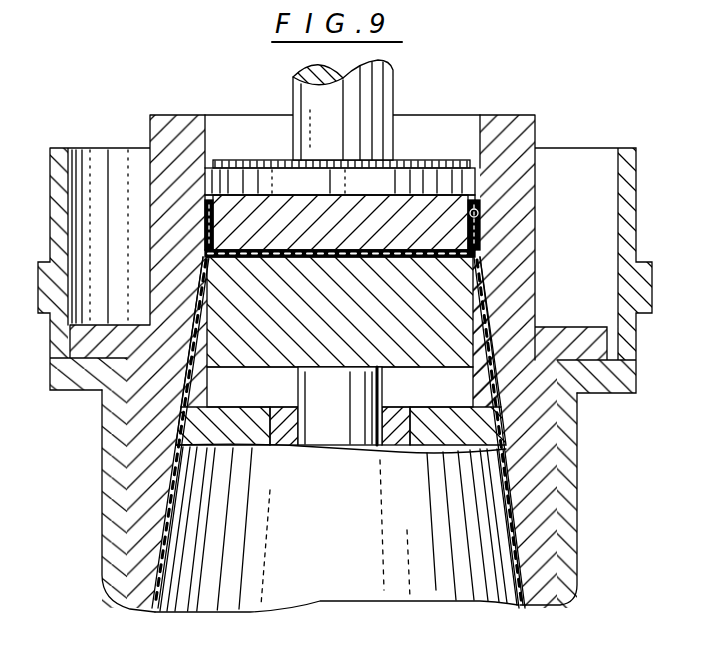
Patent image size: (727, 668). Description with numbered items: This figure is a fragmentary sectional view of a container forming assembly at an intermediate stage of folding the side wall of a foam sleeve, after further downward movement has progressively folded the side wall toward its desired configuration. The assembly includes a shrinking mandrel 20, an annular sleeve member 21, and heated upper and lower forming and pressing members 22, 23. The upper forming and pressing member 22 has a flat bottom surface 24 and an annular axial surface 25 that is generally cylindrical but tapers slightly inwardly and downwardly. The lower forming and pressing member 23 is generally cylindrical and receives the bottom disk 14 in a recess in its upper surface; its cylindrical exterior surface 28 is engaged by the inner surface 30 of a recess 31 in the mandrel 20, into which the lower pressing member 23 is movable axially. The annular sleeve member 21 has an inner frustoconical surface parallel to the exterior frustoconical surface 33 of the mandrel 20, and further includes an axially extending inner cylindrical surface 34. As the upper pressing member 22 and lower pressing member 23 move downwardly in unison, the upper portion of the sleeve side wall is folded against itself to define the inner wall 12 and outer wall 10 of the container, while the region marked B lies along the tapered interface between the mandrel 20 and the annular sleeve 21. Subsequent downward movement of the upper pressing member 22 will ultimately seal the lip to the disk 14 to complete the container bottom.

The outer wall 10 is at (481, 225).
The inner wall 12 is at (462, 247).
The bottom disk 14 is at (250, 247).
The shrinking mandrel 20 is at (346, 530).
The annular sleeve member 21 is at (538, 444).
The upper forming and pressing member 22 is at (340, 222).
The lower forming and pressing member 23 is at (349, 325).
The flat bottom surface 24 is at (282, 250).
The annular axial surface 25 is at (480, 236).
The exterior surface 28 is at (200, 314).
The inner surface 30 is at (208, 338).
The recess 31 is at (280, 380).
The exterior frustoconical surface 33 is at (528, 546).
The inner cylindrical surface 34 is at (480, 273).
The tapered bore B is at (168, 565).